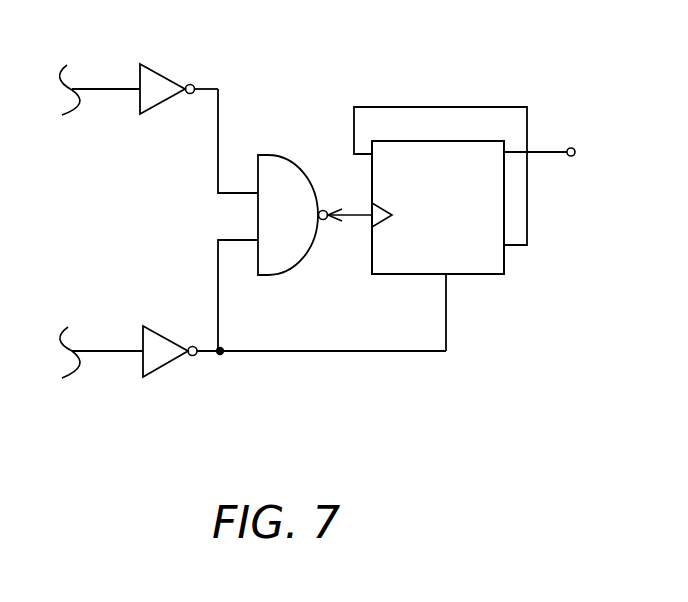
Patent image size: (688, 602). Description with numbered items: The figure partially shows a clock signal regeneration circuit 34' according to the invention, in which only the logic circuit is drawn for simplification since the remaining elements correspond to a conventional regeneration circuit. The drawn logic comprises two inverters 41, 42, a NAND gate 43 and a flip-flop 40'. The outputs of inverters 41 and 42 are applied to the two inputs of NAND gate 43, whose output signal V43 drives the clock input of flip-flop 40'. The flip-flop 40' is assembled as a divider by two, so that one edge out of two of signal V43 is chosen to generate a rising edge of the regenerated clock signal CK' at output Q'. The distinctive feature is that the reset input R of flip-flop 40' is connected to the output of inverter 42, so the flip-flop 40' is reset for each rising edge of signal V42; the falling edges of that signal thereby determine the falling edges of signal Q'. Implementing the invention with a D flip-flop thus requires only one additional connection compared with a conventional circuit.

The clock signal regeneration circuit 34' is at (531, 26).
The flip-flop 40' is at (469, 229).
The inverter 41 is at (150, 65).
The inverter 42 is at (157, 370).
The NAND gate 43 is at (270, 275).